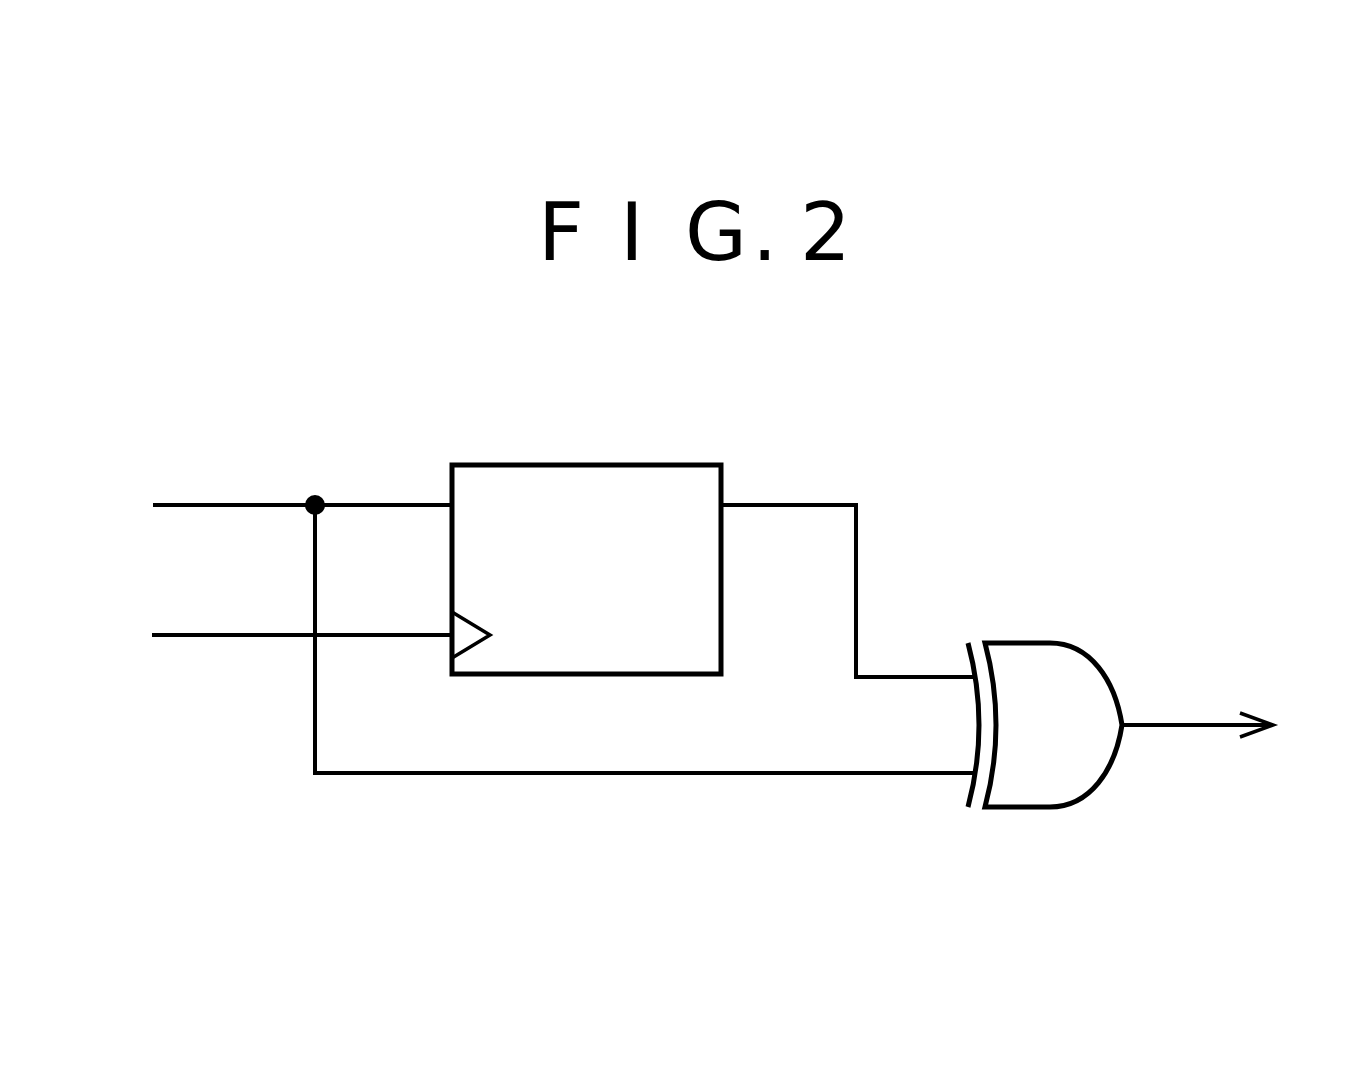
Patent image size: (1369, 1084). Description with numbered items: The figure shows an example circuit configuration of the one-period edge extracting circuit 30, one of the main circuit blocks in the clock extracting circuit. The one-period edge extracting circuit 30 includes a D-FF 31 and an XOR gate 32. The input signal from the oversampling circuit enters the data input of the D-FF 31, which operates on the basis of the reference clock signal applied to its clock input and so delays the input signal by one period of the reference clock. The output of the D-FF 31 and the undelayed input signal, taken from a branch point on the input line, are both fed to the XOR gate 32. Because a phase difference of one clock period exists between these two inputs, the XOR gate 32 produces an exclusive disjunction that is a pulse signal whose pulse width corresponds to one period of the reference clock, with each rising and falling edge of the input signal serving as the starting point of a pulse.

The one-period edge extracting circuit 30 is at (697, 572).
The D-FF 31 is at (636, 462).
The XOR gate 32 is at (1047, 640).